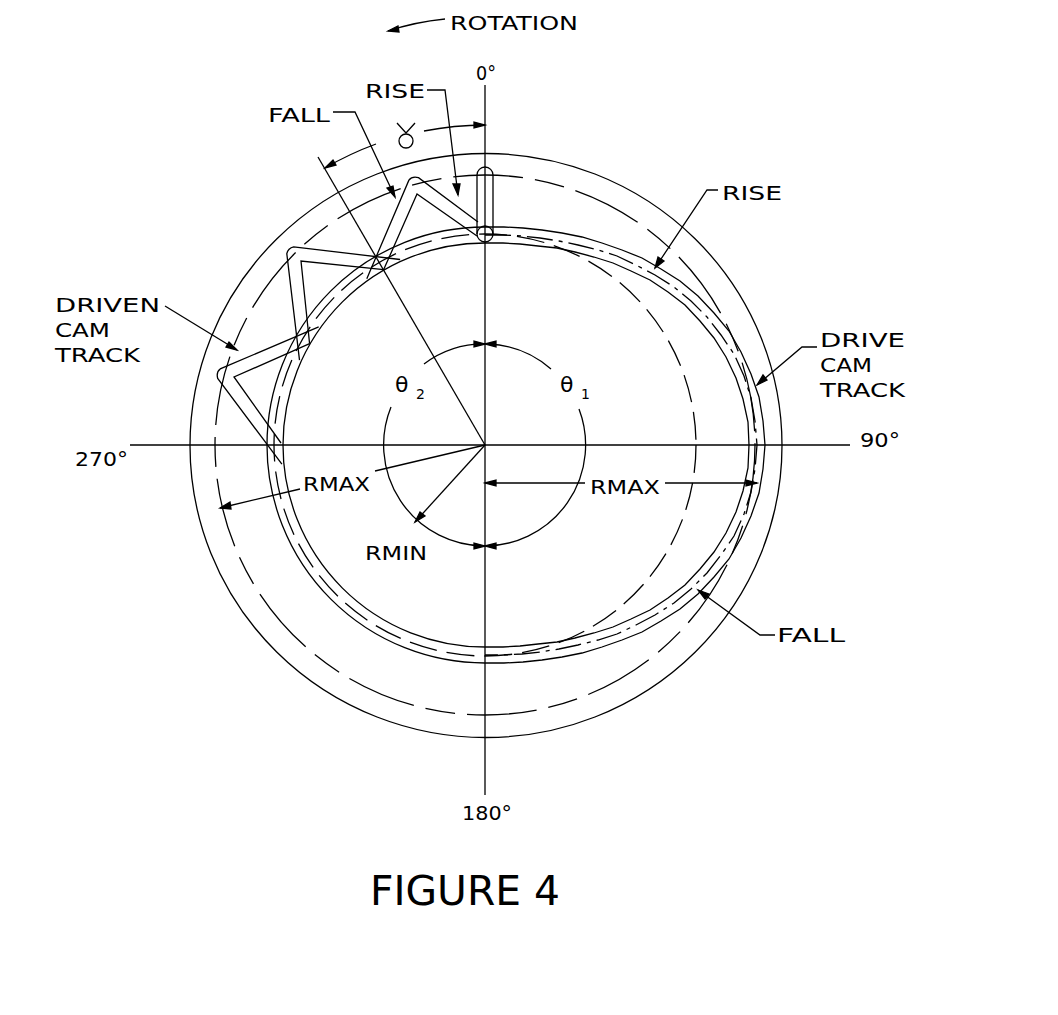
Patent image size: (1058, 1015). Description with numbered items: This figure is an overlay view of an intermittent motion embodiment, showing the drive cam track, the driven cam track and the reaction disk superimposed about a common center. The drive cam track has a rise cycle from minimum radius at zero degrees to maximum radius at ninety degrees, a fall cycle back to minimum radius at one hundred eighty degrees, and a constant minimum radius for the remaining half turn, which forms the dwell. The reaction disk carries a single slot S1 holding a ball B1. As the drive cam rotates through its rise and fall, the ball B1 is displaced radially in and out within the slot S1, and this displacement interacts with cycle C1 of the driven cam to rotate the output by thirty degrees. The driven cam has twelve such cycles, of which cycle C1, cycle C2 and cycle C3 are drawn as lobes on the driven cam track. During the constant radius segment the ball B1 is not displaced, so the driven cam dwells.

The cycle C1 is at (384, 219).
The cycle C2 is at (283, 292).
The cycle C3 is at (222, 401).
The slot S1 is at (492, 180).
The ball B1 is at (492, 230).